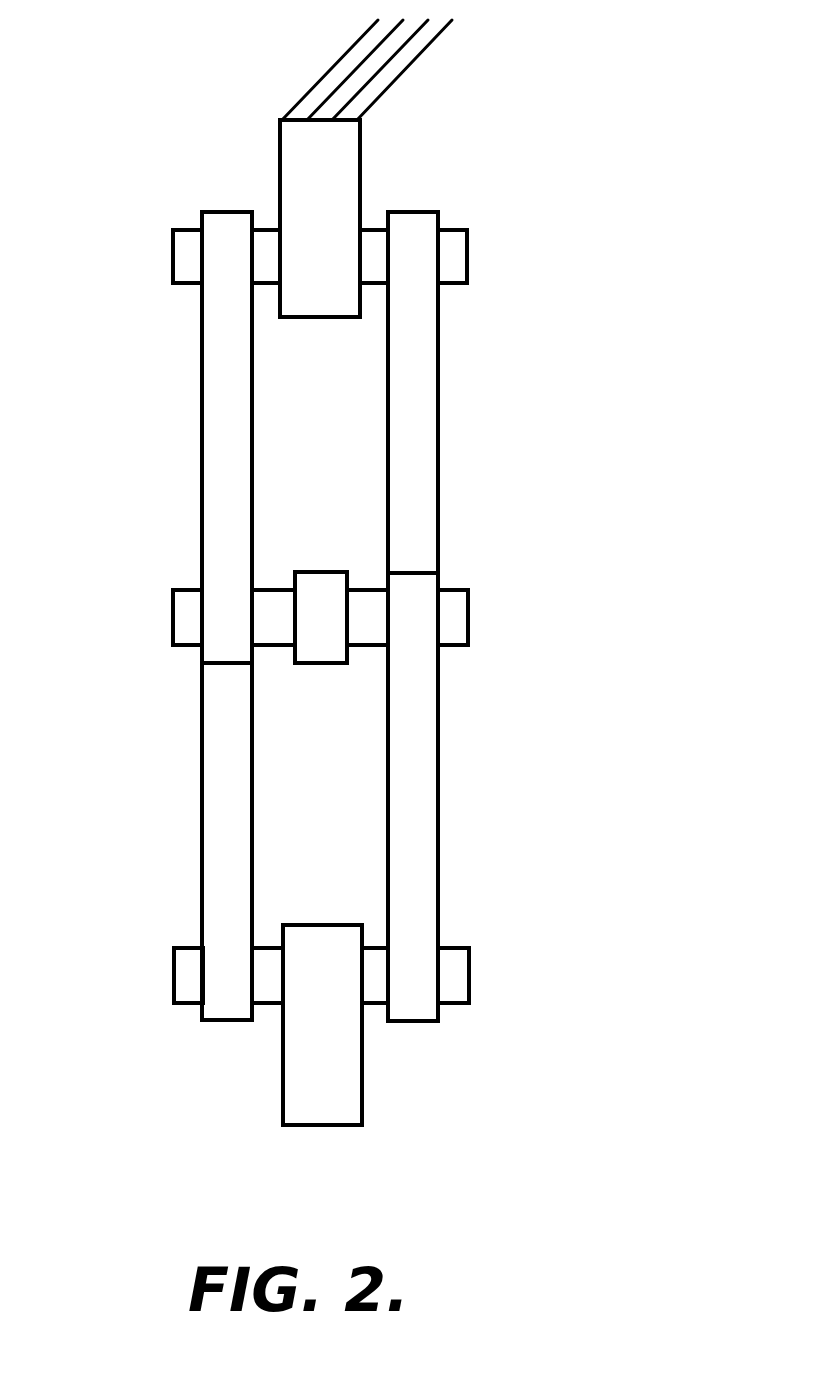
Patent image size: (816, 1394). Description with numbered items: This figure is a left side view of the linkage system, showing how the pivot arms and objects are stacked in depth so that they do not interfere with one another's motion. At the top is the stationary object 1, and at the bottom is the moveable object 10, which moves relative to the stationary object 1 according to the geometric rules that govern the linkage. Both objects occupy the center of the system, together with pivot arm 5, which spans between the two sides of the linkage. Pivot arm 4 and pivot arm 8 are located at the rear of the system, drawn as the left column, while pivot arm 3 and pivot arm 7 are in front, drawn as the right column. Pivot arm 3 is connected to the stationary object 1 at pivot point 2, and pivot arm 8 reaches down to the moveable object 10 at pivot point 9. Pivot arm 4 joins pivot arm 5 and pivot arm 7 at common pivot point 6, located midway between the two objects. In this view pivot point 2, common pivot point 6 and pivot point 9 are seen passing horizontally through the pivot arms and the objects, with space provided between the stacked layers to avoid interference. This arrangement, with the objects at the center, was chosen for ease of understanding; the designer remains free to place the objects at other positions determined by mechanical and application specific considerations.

The stationary object 1 is at (293, 143).
The pivot point 2 is at (173, 255).
The pivot arm 3 is at (420, 393).
The pivot arm 4 is at (222, 410).
The pivot arm 5 is at (317, 587).
The common pivot point 6 is at (180, 625).
The pivot arm 7 is at (420, 853).
The pivot arm 8 is at (217, 808).
The pivot point 9 is at (173, 973).
The moveable object 10 is at (303, 1072).